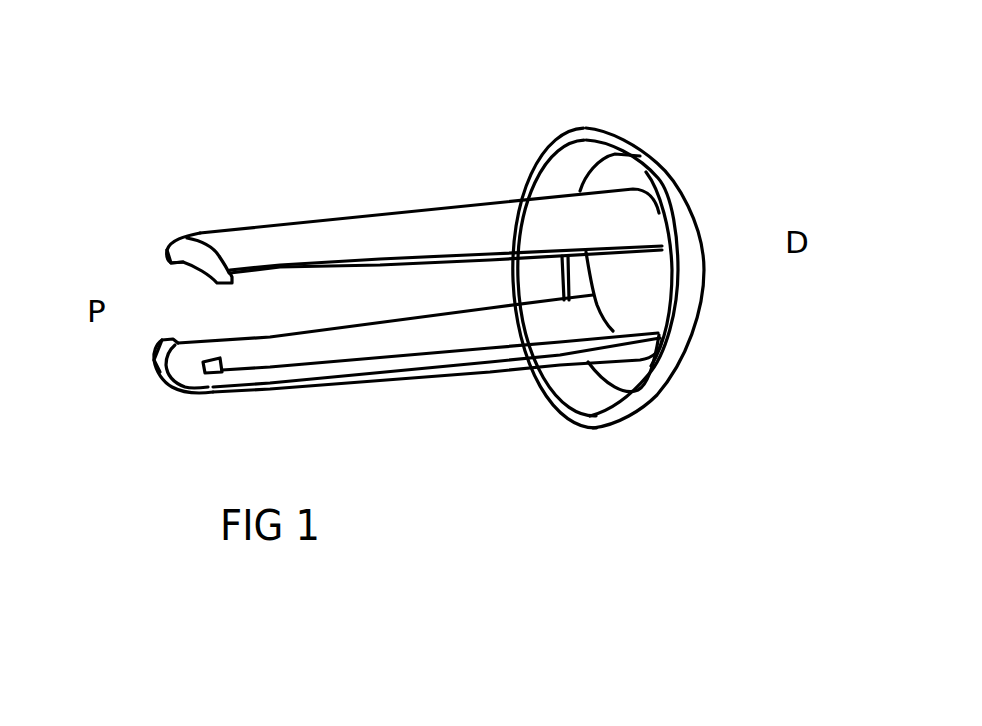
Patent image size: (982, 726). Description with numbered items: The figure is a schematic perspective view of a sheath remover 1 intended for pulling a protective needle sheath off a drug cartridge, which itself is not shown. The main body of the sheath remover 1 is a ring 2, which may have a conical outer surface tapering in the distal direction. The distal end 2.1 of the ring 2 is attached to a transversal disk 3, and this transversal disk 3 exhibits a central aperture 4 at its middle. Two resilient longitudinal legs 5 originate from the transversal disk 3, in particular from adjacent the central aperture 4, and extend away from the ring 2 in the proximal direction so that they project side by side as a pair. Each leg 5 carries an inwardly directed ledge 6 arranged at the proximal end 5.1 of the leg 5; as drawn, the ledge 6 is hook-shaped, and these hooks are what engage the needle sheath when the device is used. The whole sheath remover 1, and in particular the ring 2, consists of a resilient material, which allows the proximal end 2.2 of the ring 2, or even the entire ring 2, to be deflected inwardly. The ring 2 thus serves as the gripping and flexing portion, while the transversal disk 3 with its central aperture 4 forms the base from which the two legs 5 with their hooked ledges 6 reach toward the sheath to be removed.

The sheath remover 1 is at (465, 114).
The ring 2 is at (690, 340).
The distal end of the ring 2.1 is at (690, 190).
The proximal end of the ring 2.2 is at (570, 133).
The transversal disk 3 is at (623, 172).
The central aperture 4 is at (658, 272).
The longitudinal leg 5 is at (388, 216).
The proximal end of the leg 5.1 is at (207, 237).
The ledge 6 is at (170, 260).